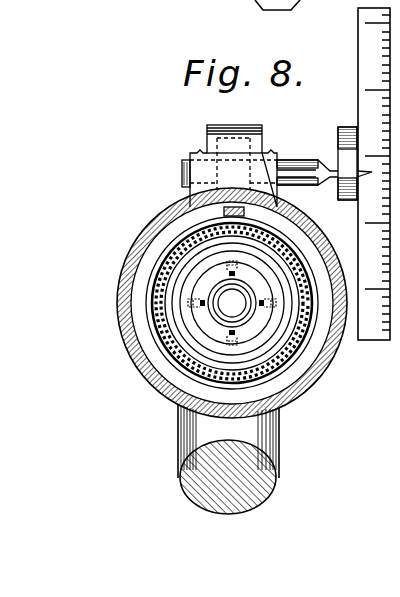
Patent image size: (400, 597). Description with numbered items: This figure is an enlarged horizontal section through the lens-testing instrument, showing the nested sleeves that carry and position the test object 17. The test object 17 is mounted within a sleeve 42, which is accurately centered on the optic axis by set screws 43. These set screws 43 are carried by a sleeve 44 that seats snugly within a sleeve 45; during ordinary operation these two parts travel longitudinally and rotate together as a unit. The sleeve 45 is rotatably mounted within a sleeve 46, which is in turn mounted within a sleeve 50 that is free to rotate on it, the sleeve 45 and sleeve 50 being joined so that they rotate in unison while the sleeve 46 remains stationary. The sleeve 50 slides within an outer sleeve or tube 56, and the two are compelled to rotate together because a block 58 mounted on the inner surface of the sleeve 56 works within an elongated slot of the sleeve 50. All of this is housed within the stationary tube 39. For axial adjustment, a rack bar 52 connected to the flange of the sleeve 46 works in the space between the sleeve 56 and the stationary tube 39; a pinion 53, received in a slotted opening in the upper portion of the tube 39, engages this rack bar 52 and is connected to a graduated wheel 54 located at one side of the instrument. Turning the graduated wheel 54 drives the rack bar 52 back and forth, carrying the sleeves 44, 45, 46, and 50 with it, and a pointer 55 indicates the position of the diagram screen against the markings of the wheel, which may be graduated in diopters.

The test object 17 is at (232, 303).
The stationary tube 39 is at (125, 282).
The sleeve 42 is at (205, 308).
The set screws 43 is at (190, 360).
The sleeve 44 is at (280, 362).
The sleeve 45 is at (268, 342).
The sleeve 46 is at (167, 253).
The sleeve 50 is at (276, 350).
The rack bar 52 is at (192, 203).
The pinion 53 is at (251, 124).
The graduated wheel 54 is at (360, 35).
The pointer 55 is at (355, 172).
The sleeve or tube 56 is at (282, 340).
The block 58 is at (142, 311).